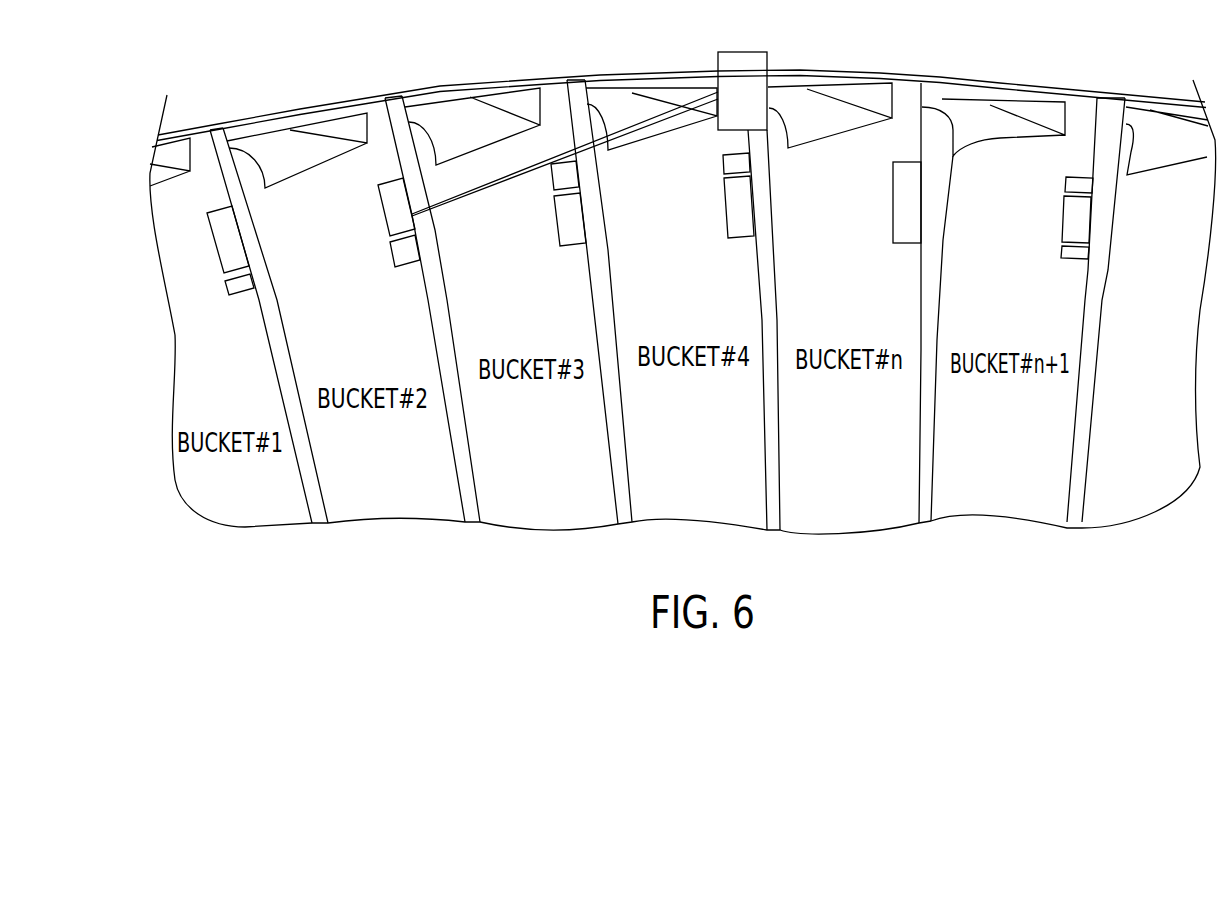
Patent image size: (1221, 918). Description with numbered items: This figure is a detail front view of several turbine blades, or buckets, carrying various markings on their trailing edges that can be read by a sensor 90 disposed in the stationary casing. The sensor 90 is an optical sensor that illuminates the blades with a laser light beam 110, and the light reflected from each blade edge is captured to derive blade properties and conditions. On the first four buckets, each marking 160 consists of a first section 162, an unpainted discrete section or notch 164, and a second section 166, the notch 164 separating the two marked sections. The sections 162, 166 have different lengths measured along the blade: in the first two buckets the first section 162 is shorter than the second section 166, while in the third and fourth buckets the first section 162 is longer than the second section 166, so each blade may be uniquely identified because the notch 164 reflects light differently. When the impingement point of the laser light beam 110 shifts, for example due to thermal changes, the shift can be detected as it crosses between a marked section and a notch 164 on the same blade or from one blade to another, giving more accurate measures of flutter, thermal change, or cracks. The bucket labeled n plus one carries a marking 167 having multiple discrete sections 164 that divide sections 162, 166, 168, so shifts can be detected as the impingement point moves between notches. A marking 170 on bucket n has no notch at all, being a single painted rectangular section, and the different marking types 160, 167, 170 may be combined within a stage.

The sensor 90 is at (745, 52).
The laser light beam 110 is at (526, 167).
The marking 160 is at (214, 292).
The first section 162 is at (249, 281).
The discrete section 164 is at (691, 221).
The second section 166 is at (242, 233).
The marking 167 is at (1037, 274).
The section 168 is at (1078, 177).
The marking 170 is at (875, 231).